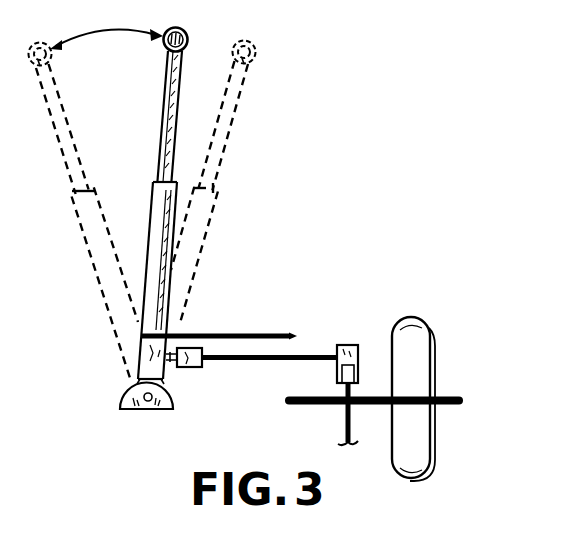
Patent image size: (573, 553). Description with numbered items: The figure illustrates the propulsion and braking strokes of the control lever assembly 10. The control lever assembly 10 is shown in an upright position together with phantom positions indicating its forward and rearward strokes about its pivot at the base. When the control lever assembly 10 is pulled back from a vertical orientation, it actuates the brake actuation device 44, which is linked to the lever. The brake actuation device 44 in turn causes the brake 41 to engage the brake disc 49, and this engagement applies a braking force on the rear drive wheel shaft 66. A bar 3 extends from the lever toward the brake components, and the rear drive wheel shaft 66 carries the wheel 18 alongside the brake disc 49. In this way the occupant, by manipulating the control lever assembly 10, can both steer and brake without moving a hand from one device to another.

The control lever assembly 10 is at (165, 82).
The bar 3 is at (257, 332).
The brake actuation device 44 is at (192, 367).
The brake 41 is at (344, 344).
The brake disc 49 is at (343, 431).
The wheel 18 is at (421, 367).
The rear drive wheel shaft 66 is at (443, 392).